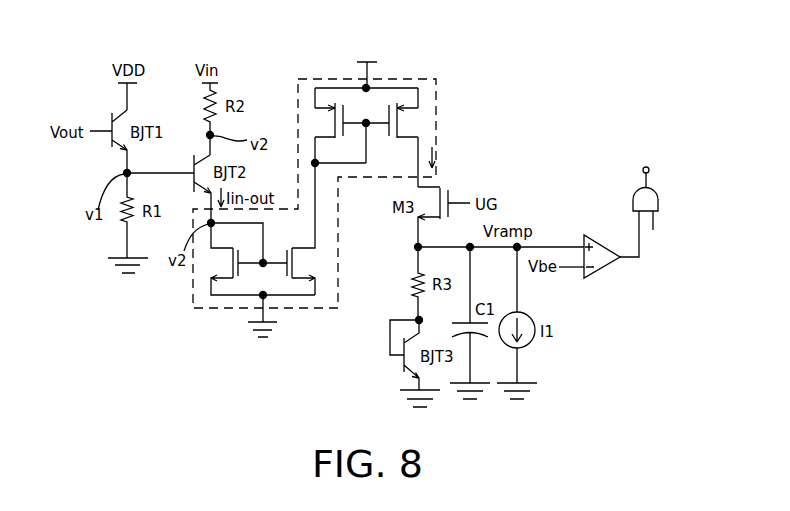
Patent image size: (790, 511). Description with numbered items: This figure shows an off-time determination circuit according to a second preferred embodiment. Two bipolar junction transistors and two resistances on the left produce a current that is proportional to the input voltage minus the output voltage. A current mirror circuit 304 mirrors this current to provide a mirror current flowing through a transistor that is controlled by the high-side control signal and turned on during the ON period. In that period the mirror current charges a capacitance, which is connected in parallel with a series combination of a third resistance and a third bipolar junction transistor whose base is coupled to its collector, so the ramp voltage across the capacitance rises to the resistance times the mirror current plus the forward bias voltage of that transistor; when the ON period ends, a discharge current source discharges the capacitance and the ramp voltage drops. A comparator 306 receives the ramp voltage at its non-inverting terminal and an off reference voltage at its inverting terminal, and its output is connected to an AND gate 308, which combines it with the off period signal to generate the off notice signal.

The current mirror circuit 304 is at (414, 77).
The comparator 306 is at (603, 269).
The AND gate 308 is at (633, 202).